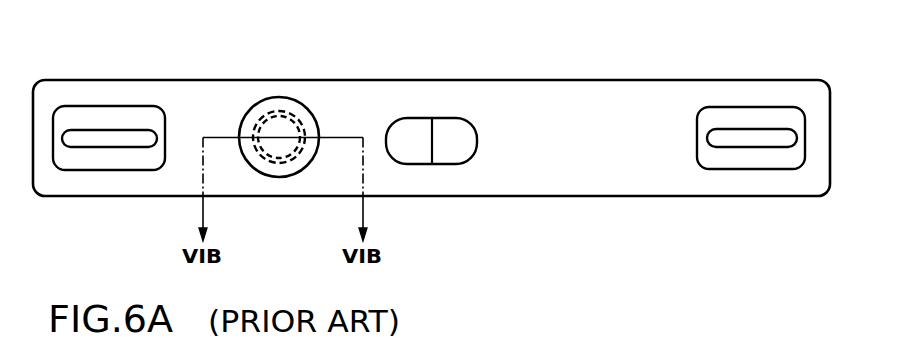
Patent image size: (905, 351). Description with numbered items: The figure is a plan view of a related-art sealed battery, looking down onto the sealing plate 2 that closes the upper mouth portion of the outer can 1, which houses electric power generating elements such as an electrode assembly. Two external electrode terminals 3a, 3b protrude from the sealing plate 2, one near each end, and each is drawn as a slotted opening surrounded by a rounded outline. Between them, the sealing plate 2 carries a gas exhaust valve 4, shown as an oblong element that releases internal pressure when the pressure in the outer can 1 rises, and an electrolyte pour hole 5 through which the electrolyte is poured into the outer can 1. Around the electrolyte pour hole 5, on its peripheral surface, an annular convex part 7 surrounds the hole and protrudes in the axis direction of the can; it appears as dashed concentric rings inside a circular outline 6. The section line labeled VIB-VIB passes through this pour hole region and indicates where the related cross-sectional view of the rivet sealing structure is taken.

The outer can 1 is at (592, 197).
The sealing plate 2 is at (583, 135).
The external electrode terminal 3a is at (110, 141).
The external electrode terminal 3b is at (748, 140).
The gas exhaust valve 4 is at (415, 137).
The electrolyte pour hole 5 is at (285, 127).
The circular opening 6 is at (308, 118).
The annular convex part 7 is at (263, 117).